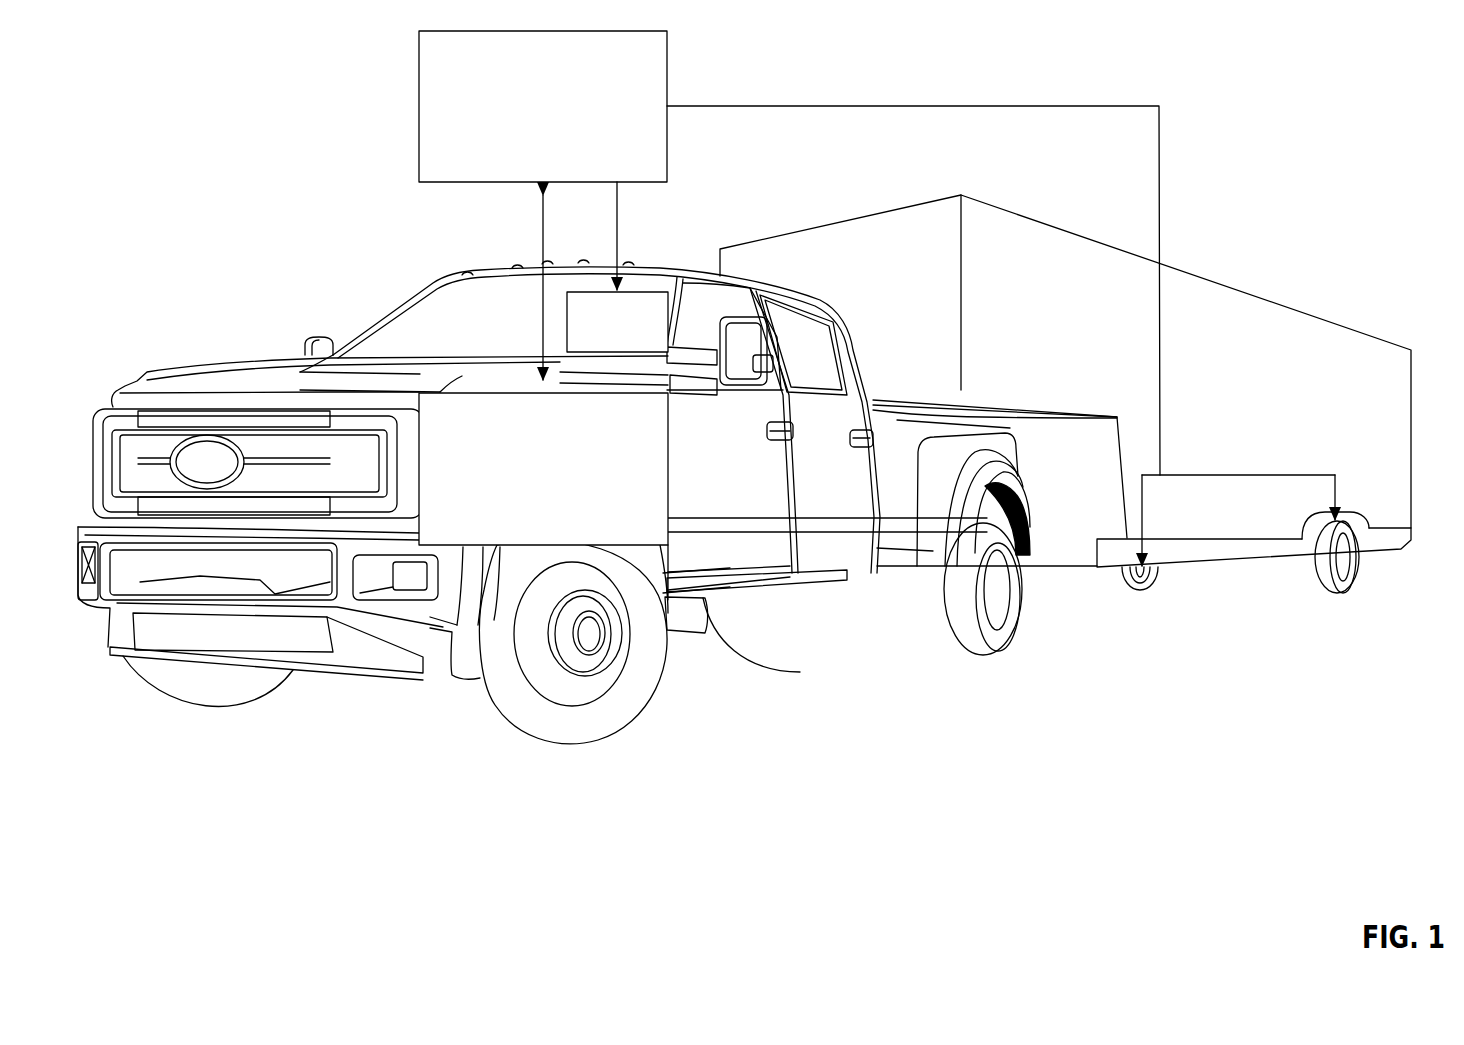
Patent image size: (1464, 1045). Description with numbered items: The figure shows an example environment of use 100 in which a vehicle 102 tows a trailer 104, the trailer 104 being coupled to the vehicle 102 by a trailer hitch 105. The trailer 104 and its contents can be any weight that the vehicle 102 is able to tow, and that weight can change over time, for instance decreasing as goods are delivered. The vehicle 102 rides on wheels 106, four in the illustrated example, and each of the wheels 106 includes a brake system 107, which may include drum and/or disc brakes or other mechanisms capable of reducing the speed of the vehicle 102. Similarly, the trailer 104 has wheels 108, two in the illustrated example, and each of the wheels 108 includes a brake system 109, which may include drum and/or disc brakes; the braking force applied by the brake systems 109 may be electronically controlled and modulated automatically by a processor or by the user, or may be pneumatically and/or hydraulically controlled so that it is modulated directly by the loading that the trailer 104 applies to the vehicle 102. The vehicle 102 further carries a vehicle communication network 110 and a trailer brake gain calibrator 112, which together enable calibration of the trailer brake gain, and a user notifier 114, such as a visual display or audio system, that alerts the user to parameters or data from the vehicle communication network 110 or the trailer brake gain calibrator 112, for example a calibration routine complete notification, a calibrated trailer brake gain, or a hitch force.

The environment of use 100 is at (248, 72).
The vehicle 102 is at (446, 266).
The trailer 104 is at (1040, 208).
The trailer hitch 105 is at (957, 410).
The wheels 106 is at (233, 703).
The brake system 107 is at (648, 652).
The wheels 108 is at (1145, 590).
The brake system 109 is at (1257, 589).
The vehicle communication network 110 is at (543, 370).
The trailer brake gain calibrator 112 is at (789, 253).
The user notifier 114 is at (617, 267).